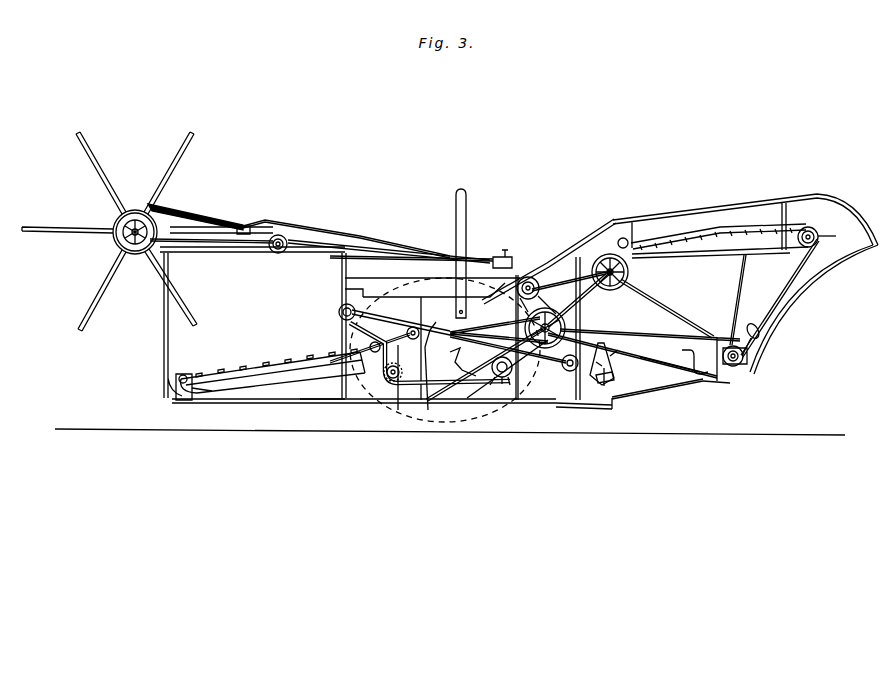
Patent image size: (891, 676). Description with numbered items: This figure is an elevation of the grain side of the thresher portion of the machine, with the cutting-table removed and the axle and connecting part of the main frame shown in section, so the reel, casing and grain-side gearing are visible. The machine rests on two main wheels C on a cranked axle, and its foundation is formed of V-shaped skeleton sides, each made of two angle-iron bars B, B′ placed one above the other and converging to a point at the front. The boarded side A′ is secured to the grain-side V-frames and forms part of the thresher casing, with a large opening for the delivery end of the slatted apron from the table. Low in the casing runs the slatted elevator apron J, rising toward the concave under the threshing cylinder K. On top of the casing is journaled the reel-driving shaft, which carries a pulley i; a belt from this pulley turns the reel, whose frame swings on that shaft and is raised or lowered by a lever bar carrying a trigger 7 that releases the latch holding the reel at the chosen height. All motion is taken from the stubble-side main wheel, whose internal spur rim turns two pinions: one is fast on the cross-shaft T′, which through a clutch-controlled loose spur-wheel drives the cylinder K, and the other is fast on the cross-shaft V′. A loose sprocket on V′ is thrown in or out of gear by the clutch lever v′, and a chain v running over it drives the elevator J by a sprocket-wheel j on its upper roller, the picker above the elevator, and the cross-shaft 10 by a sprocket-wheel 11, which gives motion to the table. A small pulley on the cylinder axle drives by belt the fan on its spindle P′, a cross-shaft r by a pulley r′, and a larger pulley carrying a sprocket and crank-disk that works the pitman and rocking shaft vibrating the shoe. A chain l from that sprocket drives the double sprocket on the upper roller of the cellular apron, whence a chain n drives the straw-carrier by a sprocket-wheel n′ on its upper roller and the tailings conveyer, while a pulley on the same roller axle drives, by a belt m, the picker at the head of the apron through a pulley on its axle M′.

The pulley i is at (278, 253).
The angle-iron bar B is at (290, 404).
The angle-iron bar B′ is at (322, 383).
The elevator apron J is at (258, 364).
The trigger 7 is at (455, 258).
The cross-shaft T′ is at (446, 313).
The main wheel C is at (478, 400).
The sprocket-wheel j is at (348, 322).
The chain v is at (420, 330).
The cross-shaft V′ is at (380, 372).
The clutch lever v′ is at (400, 365).
The cylinder K is at (520, 336).
The pulley r′ is at (540, 285).
The cross-shaft r is at (542, 262).
The chain l is at (571, 299).
The fan-spindle P′ is at (514, 360).
The sprocket-wheel 11 is at (500, 387).
The cross-shaft 10 is at (519, 389).
The boarded side A′ is at (745, 284).
The picker axle M′ is at (618, 243).
The belt m is at (702, 240).
The sprocket-wheel n′ is at (822, 237).
The chain n is at (709, 300).